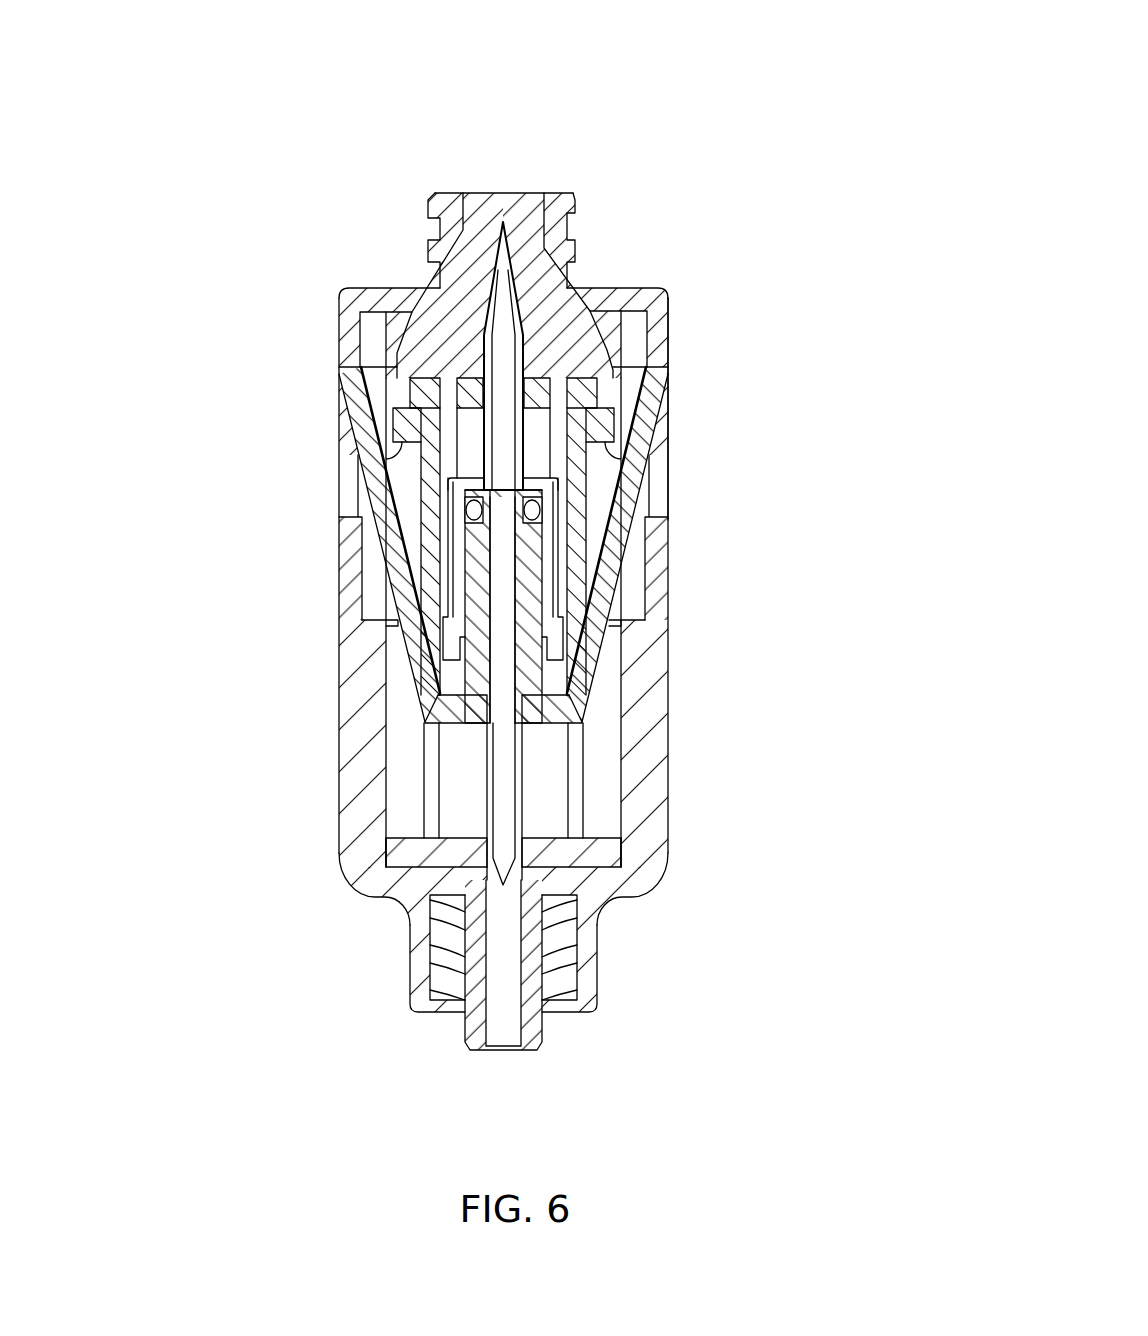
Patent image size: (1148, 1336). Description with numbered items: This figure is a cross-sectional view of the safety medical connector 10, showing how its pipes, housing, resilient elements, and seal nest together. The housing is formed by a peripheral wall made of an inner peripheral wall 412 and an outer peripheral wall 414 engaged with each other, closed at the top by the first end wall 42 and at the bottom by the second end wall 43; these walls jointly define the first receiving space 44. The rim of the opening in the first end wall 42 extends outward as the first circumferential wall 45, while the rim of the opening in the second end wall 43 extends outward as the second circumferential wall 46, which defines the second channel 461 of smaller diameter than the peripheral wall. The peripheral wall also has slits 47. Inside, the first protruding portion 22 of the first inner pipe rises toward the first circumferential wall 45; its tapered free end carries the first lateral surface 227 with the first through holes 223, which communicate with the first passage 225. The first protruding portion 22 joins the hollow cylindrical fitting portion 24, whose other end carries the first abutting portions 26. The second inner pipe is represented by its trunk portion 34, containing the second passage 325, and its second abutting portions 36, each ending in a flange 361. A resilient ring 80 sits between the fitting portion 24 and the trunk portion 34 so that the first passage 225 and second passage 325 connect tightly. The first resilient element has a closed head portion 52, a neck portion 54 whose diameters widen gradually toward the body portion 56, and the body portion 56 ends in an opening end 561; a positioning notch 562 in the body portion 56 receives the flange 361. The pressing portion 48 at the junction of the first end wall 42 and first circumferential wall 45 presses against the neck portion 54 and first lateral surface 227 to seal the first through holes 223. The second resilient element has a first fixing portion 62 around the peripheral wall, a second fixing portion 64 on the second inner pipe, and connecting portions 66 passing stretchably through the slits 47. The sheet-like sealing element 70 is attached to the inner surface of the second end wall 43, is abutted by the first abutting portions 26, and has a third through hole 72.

The safety medical connector 10 is at (563, 103).
The first end wall 42 is at (375, 302).
The first circumferential wall 45 is at (452, 207).
The head portion 52 is at (486, 198).
The first lateral surface 227 is at (548, 216).
The pressing portion 48 is at (552, 278).
The neck portion 54 is at (480, 280).
The first through holes 223 is at (510, 305).
The first protruding portion 22 is at (515, 389).
The first passage 225 is at (620, 330).
The inner peripheral wall 412 is at (368, 342).
The first fixing portion 62 is at (657, 350).
The body portion 56 is at (375, 348).
The opening end 561 is at (395, 463).
The positioning notch 562 is at (405, 390).
The slits 47 is at (347, 492).
The connecting portions 66 is at (622, 530).
The second abutting portions 36 is at (577, 463).
The flange 361 is at (583, 397).
The fitting portion 24 is at (550, 592).
The trunk portion 34 is at (530, 625).
The resilient ring 80 is at (535, 513).
The second fixing portion 64 is at (547, 710).
The second passage 325 is at (502, 730).
The first abutting portions 26 is at (557, 788).
The first receiving space 44 is at (408, 732).
The sealing element 70 is at (602, 852).
The outer peripheral wall 414 is at (353, 660).
The second end wall 43 is at (382, 883).
The second circumferential wall 46 is at (410, 995).
The third through hole 72 is at (587, 892).
The second channel 461 is at (503, 1030).